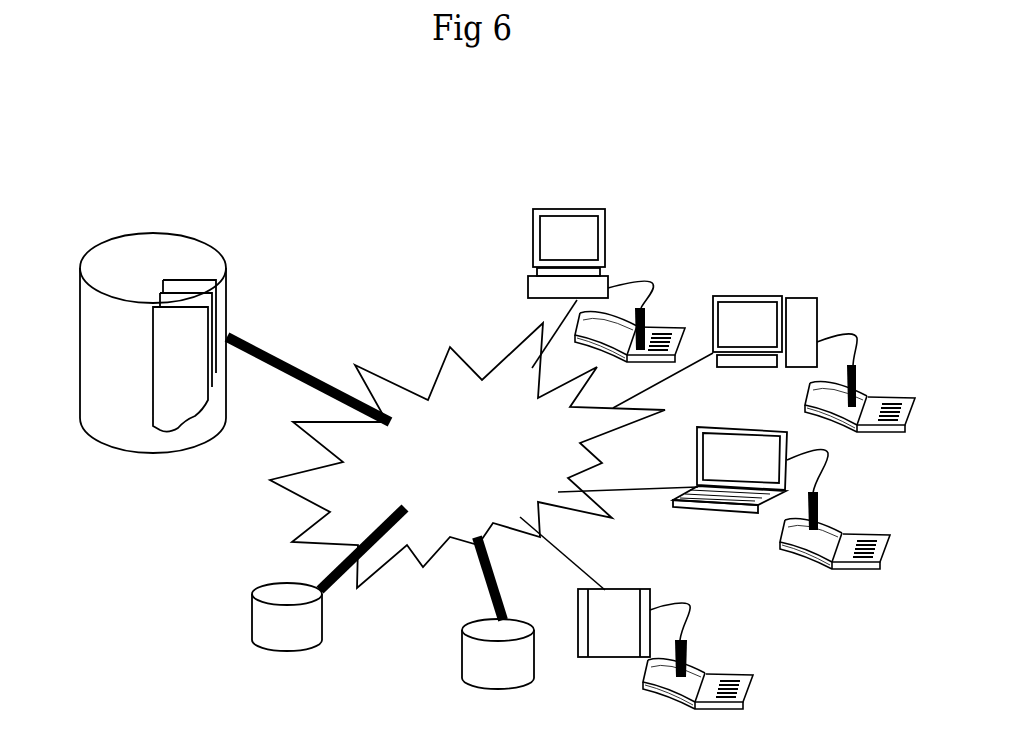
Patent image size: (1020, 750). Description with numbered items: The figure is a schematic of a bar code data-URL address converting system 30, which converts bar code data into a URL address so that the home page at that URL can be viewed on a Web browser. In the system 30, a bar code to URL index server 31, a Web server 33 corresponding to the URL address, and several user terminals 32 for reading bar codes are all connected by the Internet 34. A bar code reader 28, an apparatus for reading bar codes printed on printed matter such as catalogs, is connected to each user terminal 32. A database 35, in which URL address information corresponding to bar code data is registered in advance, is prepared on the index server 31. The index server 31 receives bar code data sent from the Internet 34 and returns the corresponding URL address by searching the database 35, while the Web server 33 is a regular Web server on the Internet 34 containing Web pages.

The bar code reader 28 is at (647, 308).
The bar code data-URL address converting system 30 is at (380, 192).
The bar code to URL index server 31 is at (92, 373).
The user terminal 32 is at (748, 297).
The Web server 33 is at (468, 655).
The Internet 34 is at (448, 392).
The database 35 is at (190, 330).